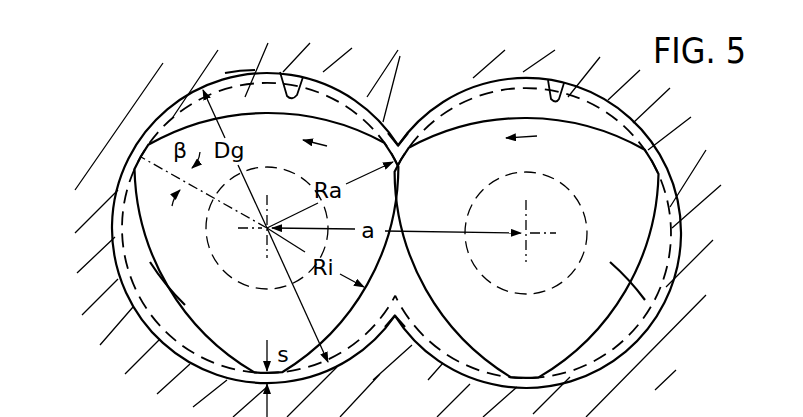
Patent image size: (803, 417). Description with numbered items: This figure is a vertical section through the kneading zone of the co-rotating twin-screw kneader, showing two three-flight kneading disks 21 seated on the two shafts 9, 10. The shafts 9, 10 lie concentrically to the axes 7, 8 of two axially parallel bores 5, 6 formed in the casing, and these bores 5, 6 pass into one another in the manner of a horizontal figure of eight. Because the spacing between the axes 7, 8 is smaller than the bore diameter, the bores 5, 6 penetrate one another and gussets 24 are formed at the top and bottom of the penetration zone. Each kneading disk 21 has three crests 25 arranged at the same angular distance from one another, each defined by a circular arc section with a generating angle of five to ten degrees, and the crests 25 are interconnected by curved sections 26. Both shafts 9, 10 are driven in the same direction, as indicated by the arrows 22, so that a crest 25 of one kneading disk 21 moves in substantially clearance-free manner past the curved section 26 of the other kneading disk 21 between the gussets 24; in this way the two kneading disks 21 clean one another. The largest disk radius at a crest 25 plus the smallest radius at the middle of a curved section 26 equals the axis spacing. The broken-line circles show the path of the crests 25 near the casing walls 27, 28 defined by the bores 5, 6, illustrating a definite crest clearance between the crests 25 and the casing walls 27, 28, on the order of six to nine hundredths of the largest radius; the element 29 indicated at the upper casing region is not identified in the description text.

The bore 5 is at (653, 320).
The bore 6 is at (115, 267).
The axis of bore 7 is at (529, 235).
The axis of bore 8 is at (265, 231).
The shaft 9 is at (583, 247).
The shaft 10 is at (208, 244).
The kneading disk 21 is at (229, 320).
The arrow indicating rotation direction 22 is at (426, 148).
The gusset 24 is at (398, 147).
The crest 25 is at (267, 228).
The curved section 26 is at (167, 282).
The casing wall 27 is at (558, 97).
The casing wall 28 is at (293, 97).
The housing top wall 29 is at (240, 72).